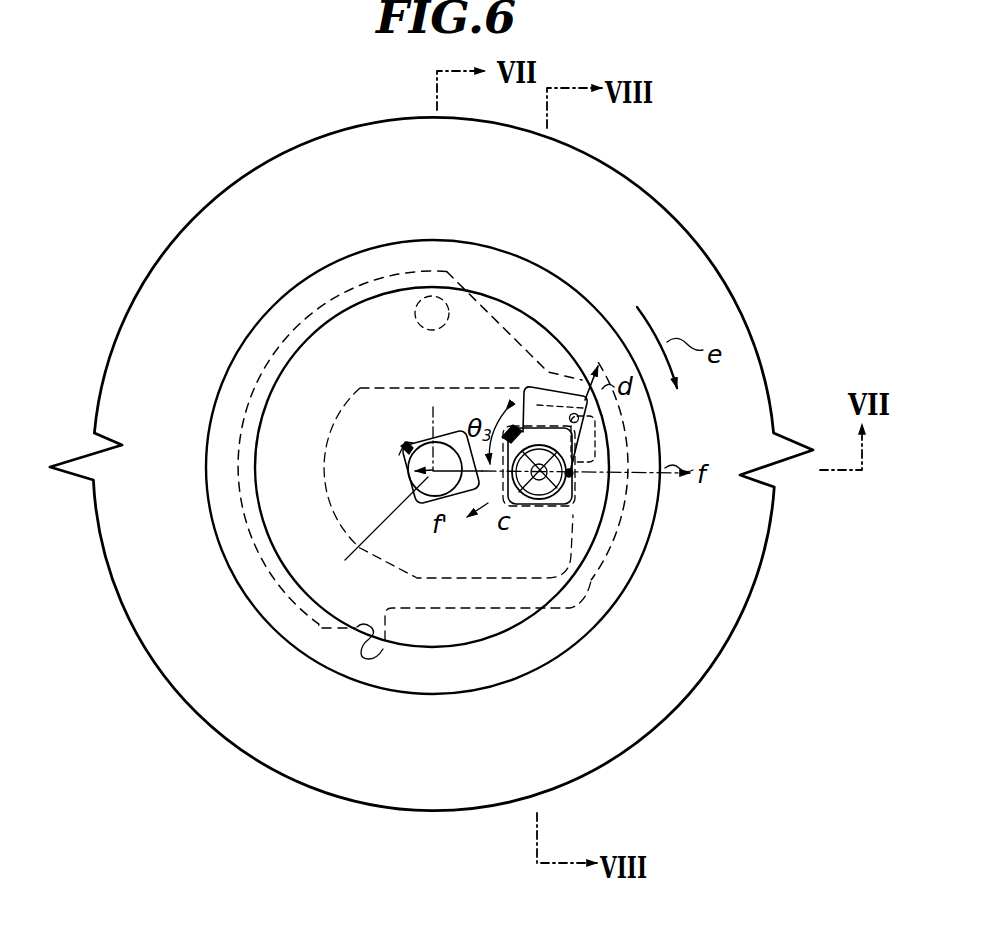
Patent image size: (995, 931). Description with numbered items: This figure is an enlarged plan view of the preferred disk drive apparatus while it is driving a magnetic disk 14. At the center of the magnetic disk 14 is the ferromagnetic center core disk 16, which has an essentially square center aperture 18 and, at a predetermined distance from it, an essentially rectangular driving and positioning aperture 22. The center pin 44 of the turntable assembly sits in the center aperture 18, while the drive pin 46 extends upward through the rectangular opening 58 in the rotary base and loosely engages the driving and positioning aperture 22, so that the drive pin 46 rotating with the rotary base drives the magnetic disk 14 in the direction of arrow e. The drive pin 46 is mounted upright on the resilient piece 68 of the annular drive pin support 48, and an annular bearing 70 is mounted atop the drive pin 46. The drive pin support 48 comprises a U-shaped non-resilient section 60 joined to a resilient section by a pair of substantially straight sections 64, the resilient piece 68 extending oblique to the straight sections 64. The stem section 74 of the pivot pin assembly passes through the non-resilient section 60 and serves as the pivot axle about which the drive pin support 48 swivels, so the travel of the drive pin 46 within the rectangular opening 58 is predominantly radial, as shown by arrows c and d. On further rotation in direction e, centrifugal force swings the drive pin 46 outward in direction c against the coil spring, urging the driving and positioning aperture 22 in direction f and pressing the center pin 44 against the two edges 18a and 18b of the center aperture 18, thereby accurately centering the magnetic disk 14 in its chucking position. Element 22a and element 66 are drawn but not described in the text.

The magnetic disk 14 is at (742, 322).
The center core disk 16 is at (545, 335).
The center aperture 18 is at (418, 503).
The edge of center aperture 18a is at (408, 457).
The edge of center aperture 18b is at (407, 445).
The driving and positioning aperture 22 is at (573, 430).
The roller shaft 22a is at (570, 442).
The center pin 44 is at (366, 531).
The drive pin 46 is at (571, 475).
The drive pin support 48 is at (265, 578).
The rectangular opening 58 is at (506, 425).
The non-resilient section 60 is at (280, 501).
The straight sections 64 is at (620, 303).
The guide slot 66 is at (618, 480).
The resilient piece 68 is at (553, 510).
The annular bearing 70 is at (571, 474).
The stem section 74 is at (443, 307).